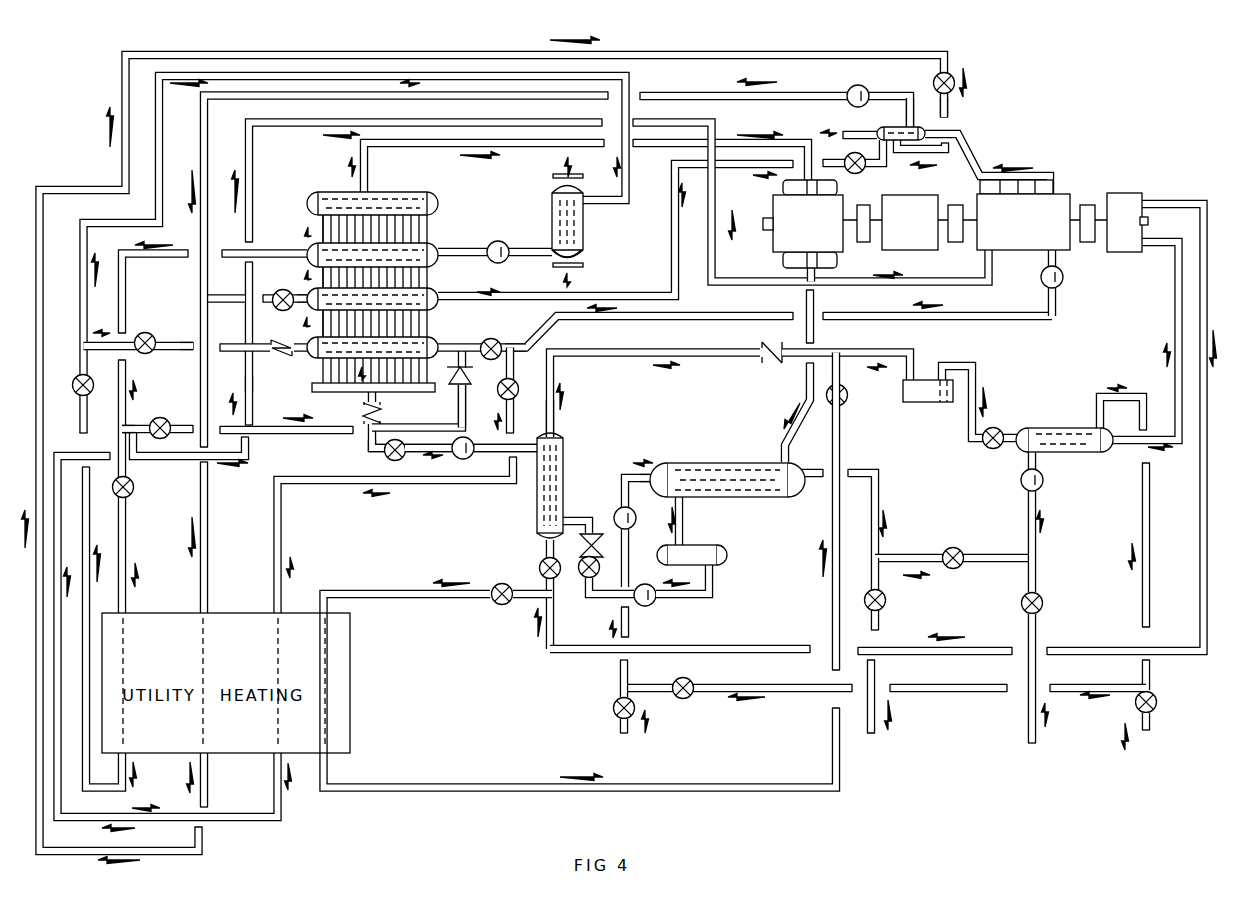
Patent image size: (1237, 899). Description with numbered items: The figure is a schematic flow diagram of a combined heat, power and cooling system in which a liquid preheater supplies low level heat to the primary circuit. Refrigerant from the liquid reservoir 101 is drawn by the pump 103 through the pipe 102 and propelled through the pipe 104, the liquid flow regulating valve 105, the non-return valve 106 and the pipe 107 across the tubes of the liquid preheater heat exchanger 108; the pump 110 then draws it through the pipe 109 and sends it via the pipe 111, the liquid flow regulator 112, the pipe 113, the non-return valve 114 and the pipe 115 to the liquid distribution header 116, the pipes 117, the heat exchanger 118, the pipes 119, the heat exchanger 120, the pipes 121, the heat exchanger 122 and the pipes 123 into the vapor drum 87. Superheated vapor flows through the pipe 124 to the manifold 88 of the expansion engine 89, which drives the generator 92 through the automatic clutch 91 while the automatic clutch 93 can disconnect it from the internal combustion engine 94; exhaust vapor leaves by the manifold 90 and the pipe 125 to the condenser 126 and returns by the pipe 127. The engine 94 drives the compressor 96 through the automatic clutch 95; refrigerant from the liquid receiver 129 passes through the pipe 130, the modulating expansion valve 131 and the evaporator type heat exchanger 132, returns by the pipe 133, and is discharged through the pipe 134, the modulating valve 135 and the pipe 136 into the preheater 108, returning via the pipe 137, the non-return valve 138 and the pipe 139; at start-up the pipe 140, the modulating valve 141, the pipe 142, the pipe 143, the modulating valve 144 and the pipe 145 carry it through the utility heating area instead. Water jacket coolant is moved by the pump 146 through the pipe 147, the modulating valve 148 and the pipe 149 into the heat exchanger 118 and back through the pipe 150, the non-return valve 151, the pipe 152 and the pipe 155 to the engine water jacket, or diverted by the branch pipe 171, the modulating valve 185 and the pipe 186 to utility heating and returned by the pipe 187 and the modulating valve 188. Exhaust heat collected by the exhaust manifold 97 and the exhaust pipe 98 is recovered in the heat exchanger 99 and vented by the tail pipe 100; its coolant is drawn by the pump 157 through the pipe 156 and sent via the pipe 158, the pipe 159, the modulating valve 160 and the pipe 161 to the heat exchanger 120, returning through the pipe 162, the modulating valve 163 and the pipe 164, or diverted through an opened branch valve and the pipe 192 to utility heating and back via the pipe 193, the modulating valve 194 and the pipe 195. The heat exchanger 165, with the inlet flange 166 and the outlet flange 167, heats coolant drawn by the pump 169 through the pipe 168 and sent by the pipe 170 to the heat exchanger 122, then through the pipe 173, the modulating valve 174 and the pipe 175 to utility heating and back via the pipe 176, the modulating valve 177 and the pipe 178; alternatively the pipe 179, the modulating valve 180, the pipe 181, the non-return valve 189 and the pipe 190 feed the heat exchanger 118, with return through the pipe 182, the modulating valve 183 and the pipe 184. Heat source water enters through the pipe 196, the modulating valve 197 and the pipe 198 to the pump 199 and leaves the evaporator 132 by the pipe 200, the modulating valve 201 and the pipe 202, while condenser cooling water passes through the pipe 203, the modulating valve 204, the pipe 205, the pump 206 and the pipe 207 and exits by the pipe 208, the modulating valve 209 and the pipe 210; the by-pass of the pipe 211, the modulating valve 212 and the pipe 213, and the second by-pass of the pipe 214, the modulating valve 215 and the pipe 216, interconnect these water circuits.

The vapor drum 87 is at (370, 192).
The manifold 88 is at (782, 186).
The expansion engine 89 is at (778, 246).
The manifold 90 is at (790, 270).
The automatic clutch 91 is at (862, 233).
The generator 92 is at (910, 232).
The automatic clutch 93 is at (962, 244).
The internal combustion engine 94 is at (1034, 250).
The automatic clutch 95 is at (1093, 246).
The compressor 96 is at (1130, 252).
The exhaust manifold 97 is at (1050, 168).
The exhaust pipe 98 is at (968, 150).
The heat exchanger 99 is at (880, 126).
The tail pipe 100 is at (874, 130).
The liquid reservoir 101 is at (690, 550).
The pipe 102 is at (712, 588).
The pump 103 is at (652, 606).
The pipe 104 is at (578, 600).
The liquid flow regulating valve 105 is at (594, 576).
The non-return valve 106 is at (603, 545).
The pipe 107 is at (578, 520).
The liquid preheater heat exchanger 108 is at (565, 490).
The pipe 109 is at (516, 440).
The pump 110 is at (460, 458).
The pipe 111 is at (428, 463).
The liquid flow regulator 112 is at (396, 460).
The pipe 113 is at (367, 447).
The non-return valve 114 is at (364, 414).
The pipe 115 is at (352, 396).
The liquid distribution header 116 is at (417, 406).
The pipes 117 is at (458, 364).
The heat exchanger 118 is at (436, 338).
The pipes 119 is at (428, 322).
The heat exchanger 120 is at (431, 291).
The pipes 121 is at (390, 273).
The heat exchanger 122 is at (431, 247).
The pipes 123 is at (431, 228).
The pipe 124 is at (586, 165).
The pipe 125 is at (815, 310).
The condenser 126 is at (738, 462).
The pipe 127 is at (684, 518).
The liquid receiver 129 is at (920, 404).
The pipe 130 is at (968, 368).
The modulating expansion valve 131 is at (986, 448).
The evaporator type heat exchanger 132 is at (1048, 426).
The pipe 133 is at (1172, 382).
The pipe 134 is at (580, 654).
The modulating valve 135 is at (540, 568).
The pipe 136 is at (546, 550).
The pipe 137 is at (625, 357).
The non-return valve 138 is at (768, 364).
The pipe 139 is at (908, 354).
The pipe 140 is at (527, 608).
The modulating valve 141 is at (494, 602).
The pipe 142 is at (342, 594).
The pipe 143 is at (840, 466).
The modulating valve 144 is at (846, 398).
The pipe 145 is at (842, 374).
The pump 146 is at (1063, 290).
The pipe 147 is at (1028, 326).
The modulating valve 148 is at (497, 340).
The pipe 149 is at (476, 334).
The pipe 150 is at (266, 359).
The non-return valve 151 is at (280, 342).
The pipe 152 is at (268, 383).
The pipe 155 is at (626, 241).
The pipe 156 is at (911, 100).
The pump 157 is at (852, 90).
The pipe 158 is at (208, 134).
The pipe 159 is at (226, 285).
The modulating valve 160 is at (280, 292).
The pipe 161 is at (291, 290).
The pipe 162 is at (677, 200).
The modulating valve 163 is at (846, 172).
The pipe 164 is at (888, 170).
The heat exchanger 165 is at (580, 246).
The inlet flange 166 is at (584, 258).
The outlet flange 167 is at (553, 176).
The pipe 168 is at (553, 265).
The pump 169 is at (502, 244).
The pipe 170 is at (472, 248).
The branch pipe 171 is at (522, 391).
The pipe 173 is at (126, 468).
The modulating valve 174 is at (131, 494).
The pipe 175 is at (126, 546).
The pipe 176 is at (80, 424).
The modulating valve 177 is at (76, 380).
The pipe 178 is at (371, 247).
The pipe 179 is at (143, 426).
The modulating valve 180 is at (166, 420).
The pipe 181 is at (335, 436).
The pipe 182 is at (182, 358).
The modulating valve 183 is at (138, 352).
The pipe 184 is at (139, 356).
The modulating valve 185 is at (523, 390).
The pipe 186 is at (282, 550).
The pipe 187 is at (248, 447).
The modulating valve 188 is at (263, 404).
The non-return valve 189 is at (477, 406).
The pipe 190 is at (468, 372).
The pipe 192 is at (209, 532).
The pipe 193 is at (953, 52).
The modulating valve 194 is at (952, 75).
The pipe 195 is at (961, 107).
The pipe 196 is at (1026, 730).
The modulating valve 197 is at (1049, 601).
The pipe 198 is at (1038, 572).
The pump 199 is at (1044, 480).
The pipe 200 is at (1092, 416).
The modulating valve 201 is at (1156, 700).
The pipe 202 is at (1150, 718).
The pipe 203 is at (618, 722).
The modulating valve 204 is at (613, 708).
The pipe 205 is at (630, 628).
The pump 206 is at (634, 524).
The pipe 207 is at (620, 488).
The pipe 208 is at (876, 488).
The modulating valve 209 is at (882, 608).
The pipe 210 is at (868, 737).
The pipe 211 is at (888, 554).
The modulating valve 212 is at (958, 550).
The pipe 213 is at (1008, 566).
The pipe 214 is at (756, 690).
The modulating valve 215 is at (686, 698).
The pipe 216 is at (668, 686).